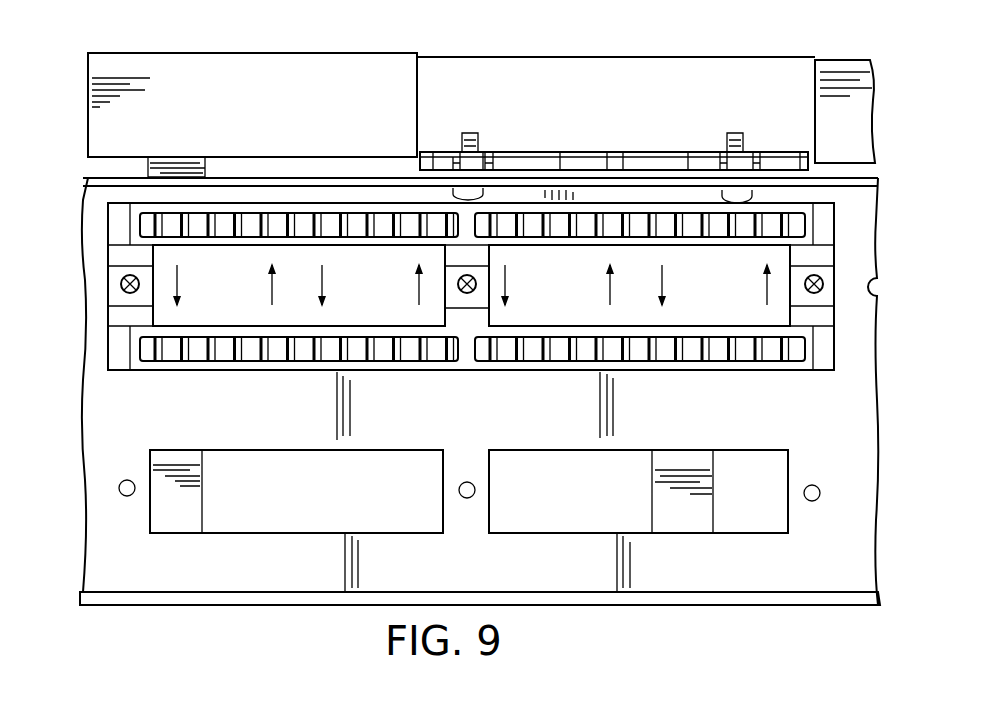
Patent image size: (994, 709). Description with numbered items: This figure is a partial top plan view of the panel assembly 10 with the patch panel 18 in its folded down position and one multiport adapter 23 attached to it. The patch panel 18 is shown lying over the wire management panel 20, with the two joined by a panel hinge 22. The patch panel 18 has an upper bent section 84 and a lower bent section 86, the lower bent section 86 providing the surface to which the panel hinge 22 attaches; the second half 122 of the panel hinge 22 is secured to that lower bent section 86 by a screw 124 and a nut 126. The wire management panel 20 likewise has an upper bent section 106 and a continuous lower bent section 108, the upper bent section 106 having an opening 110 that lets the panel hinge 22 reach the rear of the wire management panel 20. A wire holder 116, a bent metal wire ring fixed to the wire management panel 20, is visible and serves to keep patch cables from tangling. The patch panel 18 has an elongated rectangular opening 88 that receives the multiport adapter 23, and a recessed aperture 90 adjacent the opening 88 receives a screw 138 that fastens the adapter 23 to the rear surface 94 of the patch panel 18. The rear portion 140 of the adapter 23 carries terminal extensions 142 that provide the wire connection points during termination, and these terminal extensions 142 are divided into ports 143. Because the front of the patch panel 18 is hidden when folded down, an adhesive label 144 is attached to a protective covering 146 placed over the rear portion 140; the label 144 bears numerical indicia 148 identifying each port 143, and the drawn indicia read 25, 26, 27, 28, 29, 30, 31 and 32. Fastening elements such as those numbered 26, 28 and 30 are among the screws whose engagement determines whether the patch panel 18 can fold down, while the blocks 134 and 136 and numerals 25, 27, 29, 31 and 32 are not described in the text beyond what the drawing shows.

The panel assembly 10 is at (179, 48).
The patch panel 18 is at (133, 394).
The wire management panel 20 is at (298, 54).
The panel hinge 22 is at (567, 152).
The multiport adapter 23 is at (273, 370).
The terminal 25 is at (195, 284).
The fastening element 26 is at (251, 284).
The terminal 27 is at (339, 284).
The fastening element 28 is at (401, 284).
The terminal 29 is at (525, 284).
The fastening element 30 is at (591, 284).
The terminal 31 is at (679, 284).
The terminal 32 is at (748, 284).
The upper bent section 84 is at (235, 590).
The lower bent section 86 is at (87, 173).
The rectangular opening 88 is at (540, 453).
The recessed aperture 90 is at (462, 499).
The rear surface 94 is at (793, 426).
The upper bent section 106 is at (343, 53).
The lower bent section 108 is at (603, 57).
The opening 110 is at (420, 116).
The wire holder 116 is at (202, 512).
The second half 122 is at (608, 158).
The screw 124 is at (478, 140).
The nut 126 is at (442, 163).
The left block 134 is at (300, 474).
The right block 136 is at (547, 375).
The screw 138 is at (120, 282).
The rear portion 140 is at (641, 356).
The terminal extension 142 is at (195, 362).
The port 143 is at (240, 215).
The adhesive label 144 is at (247, 322).
The protective covering 146 is at (113, 252).
The numerical indicia 148 is at (355, 297).